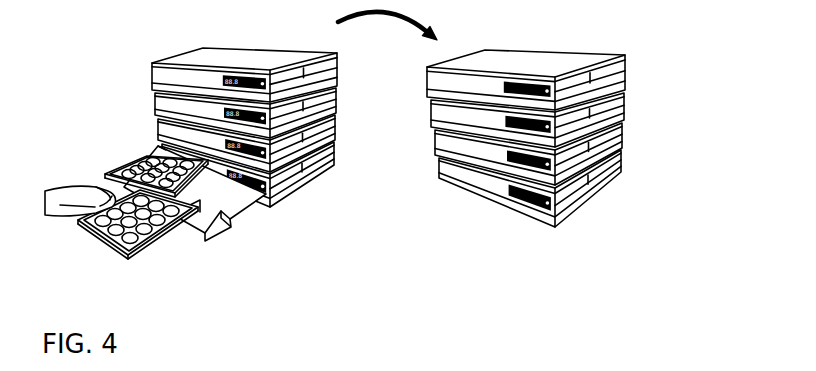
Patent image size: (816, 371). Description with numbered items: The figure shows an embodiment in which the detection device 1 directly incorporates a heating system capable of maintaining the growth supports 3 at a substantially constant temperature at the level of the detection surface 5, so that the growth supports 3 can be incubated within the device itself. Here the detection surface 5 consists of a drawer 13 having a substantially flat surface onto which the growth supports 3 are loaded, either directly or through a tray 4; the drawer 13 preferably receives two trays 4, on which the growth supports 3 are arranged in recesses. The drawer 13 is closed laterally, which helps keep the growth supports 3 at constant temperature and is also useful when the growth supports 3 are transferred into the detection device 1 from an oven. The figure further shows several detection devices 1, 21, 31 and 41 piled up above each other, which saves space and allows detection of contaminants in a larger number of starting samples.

The detection device 1 is at (626, 71).
The detection device 21 is at (624, 105).
The detection device 31 is at (624, 138).
The detection device 41 is at (614, 172).
The growth supports 3 is at (143, 228).
The tray 4 is at (102, 248).
The detection surface 5 is at (218, 190).
The drawer 13 is at (207, 246).